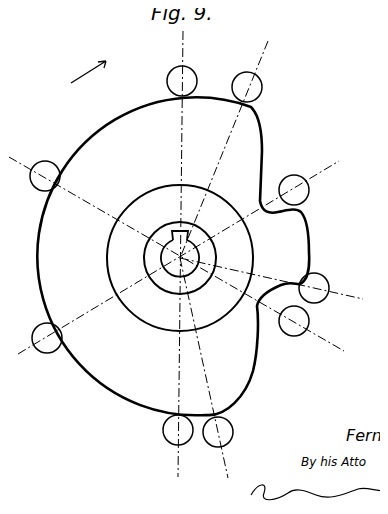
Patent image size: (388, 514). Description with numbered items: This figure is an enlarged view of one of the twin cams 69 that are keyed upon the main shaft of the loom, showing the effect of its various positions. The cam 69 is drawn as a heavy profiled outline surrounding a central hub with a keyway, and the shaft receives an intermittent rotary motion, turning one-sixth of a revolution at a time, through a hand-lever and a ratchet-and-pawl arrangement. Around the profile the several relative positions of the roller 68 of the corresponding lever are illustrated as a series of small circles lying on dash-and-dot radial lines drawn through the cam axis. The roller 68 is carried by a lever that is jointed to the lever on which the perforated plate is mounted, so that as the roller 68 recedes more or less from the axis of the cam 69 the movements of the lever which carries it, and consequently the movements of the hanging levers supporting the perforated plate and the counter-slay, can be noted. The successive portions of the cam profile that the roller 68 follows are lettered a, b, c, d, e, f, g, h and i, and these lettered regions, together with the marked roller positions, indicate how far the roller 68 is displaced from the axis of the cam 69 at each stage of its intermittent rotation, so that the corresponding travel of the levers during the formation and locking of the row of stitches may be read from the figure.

The roller 68 is at (192, 72).
The cam 69 is at (180, 263).
The cam section a is at (126, 139).
The cam section b is at (62, 242).
The cam section c is at (99, 354).
The cam section d is at (190, 404).
The cam section e is at (227, 359).
The cam section f is at (261, 289).
The cam section g is at (291, 250).
The cam section h is at (236, 154).
The cam section i is at (199, 134).